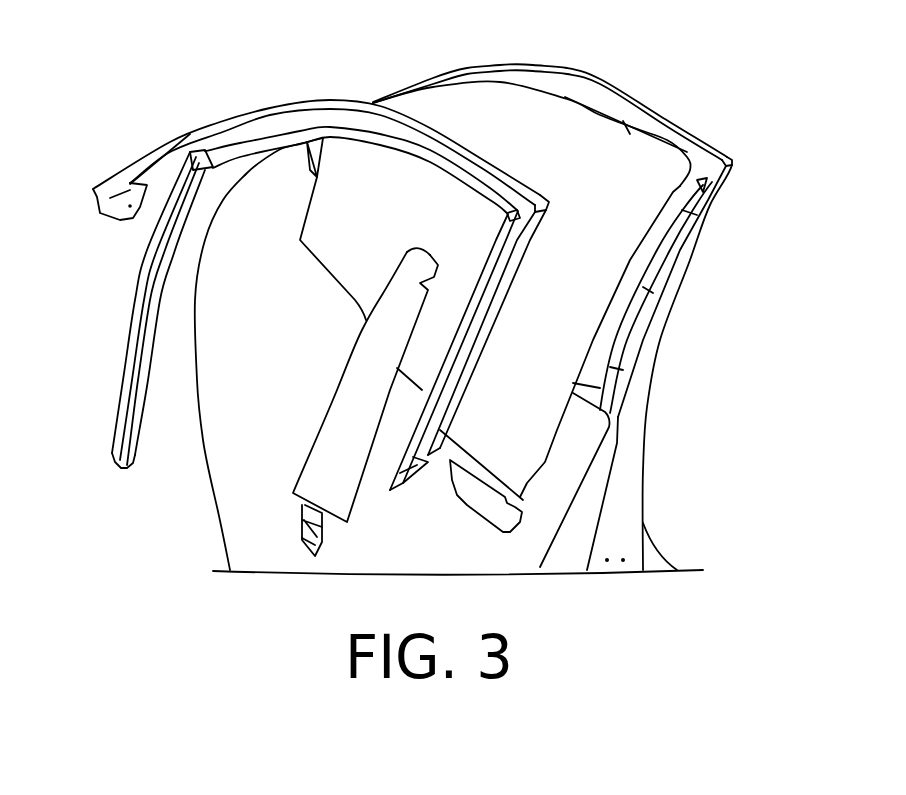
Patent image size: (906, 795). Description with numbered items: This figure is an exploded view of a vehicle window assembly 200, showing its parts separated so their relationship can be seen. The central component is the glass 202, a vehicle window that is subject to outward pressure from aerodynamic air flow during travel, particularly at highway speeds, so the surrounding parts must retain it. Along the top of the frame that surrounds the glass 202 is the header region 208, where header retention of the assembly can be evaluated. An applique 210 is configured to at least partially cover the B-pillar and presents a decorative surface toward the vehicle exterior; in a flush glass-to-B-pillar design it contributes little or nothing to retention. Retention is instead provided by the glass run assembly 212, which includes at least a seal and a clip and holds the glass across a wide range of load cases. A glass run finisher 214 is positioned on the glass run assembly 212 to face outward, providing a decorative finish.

The window assembly 200 is at (757, 57).
The glass 202 is at (578, 310).
The header region 208 is at (631, 88).
The applique 210 is at (333, 488).
The glass run assembly 212 is at (280, 128).
The glass run finisher 214 is at (377, 127).